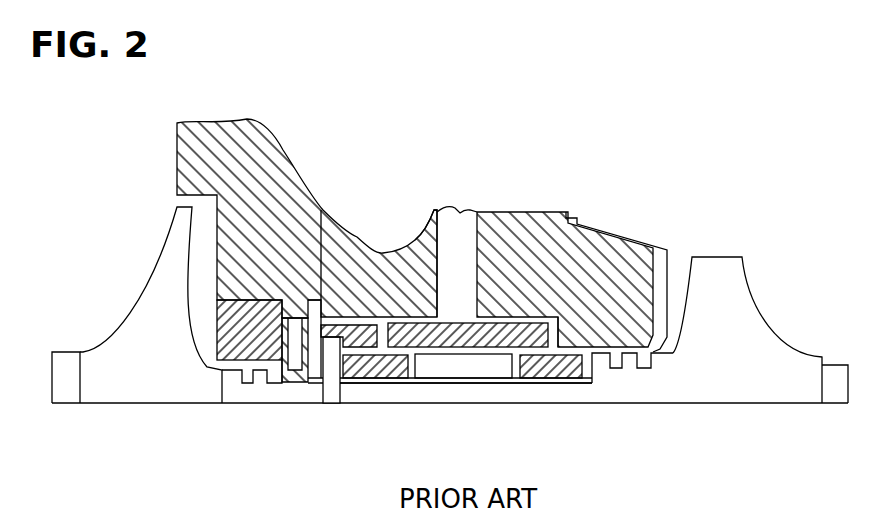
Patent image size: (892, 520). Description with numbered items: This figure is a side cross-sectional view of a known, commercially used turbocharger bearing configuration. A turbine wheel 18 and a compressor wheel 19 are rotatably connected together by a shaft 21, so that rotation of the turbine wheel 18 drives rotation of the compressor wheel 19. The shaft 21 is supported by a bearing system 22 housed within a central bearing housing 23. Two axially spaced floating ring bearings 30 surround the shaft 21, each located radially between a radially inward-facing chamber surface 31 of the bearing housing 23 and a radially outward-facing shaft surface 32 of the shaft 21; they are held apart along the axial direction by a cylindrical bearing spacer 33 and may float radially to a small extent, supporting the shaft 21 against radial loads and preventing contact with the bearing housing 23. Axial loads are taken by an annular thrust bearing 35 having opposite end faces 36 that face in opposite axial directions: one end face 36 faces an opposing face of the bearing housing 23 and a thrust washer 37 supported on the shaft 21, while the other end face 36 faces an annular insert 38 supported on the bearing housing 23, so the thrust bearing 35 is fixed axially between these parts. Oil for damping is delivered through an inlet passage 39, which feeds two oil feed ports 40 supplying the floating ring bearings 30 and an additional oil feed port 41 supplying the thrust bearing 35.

The turbine wheel 18 is at (730, 281).
The compressor wheel 19 is at (187, 393).
The shaft 21 is at (640, 372).
The bearing system 22 is at (367, 387).
The bearing housing 23 is at (273, 155).
The floating ring bearings 30 is at (398, 381).
The chamber surface 31 is at (502, 342).
The shaft surface 32 is at (430, 385).
The bearing spacer 33 is at (470, 367).
The thrust bearing 35 is at (308, 379).
The end faces 36 is at (323, 211).
The thrust washer 37 is at (331, 398).
The insert 38 is at (220, 323).
The inlet passage 39 is at (460, 204).
The oil feed ports 40 is at (380, 332).
The oil feed port 41 is at (336, 316).